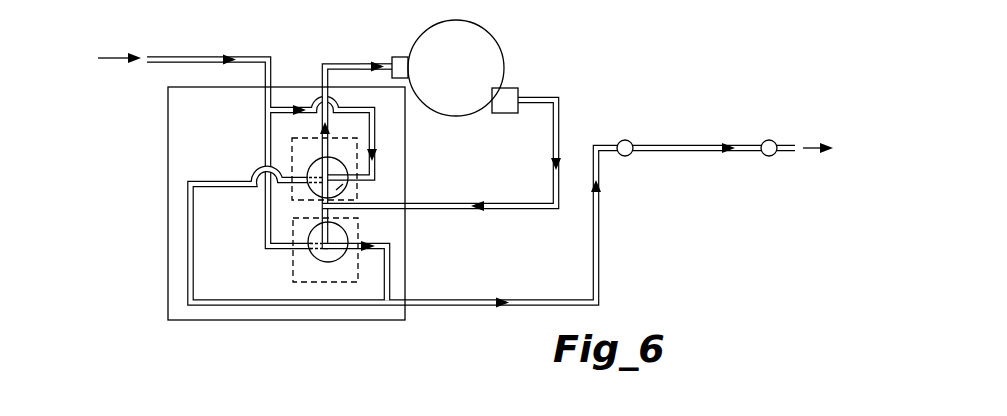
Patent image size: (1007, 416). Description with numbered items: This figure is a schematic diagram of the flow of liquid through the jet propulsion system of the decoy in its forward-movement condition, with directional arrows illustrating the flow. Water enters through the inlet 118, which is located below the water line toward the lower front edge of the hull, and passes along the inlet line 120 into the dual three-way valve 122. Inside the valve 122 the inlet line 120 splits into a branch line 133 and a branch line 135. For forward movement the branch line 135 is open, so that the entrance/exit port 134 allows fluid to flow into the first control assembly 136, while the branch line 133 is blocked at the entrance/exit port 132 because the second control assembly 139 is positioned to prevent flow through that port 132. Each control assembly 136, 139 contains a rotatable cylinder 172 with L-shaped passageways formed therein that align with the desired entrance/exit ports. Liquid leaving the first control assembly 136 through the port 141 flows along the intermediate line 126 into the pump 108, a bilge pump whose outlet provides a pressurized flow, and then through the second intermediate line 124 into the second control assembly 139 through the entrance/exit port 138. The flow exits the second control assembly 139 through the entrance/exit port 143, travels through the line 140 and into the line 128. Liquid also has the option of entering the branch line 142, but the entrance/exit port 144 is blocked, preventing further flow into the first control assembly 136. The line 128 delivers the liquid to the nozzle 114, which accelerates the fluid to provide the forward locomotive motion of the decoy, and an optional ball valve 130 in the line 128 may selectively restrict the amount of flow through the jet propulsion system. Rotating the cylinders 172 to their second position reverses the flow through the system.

The pump 108 is at (500, 50).
The nozzle 114 is at (782, 107).
The inlet 118 is at (147, 62).
The inlet line 120 is at (220, 33).
The dual three-way valve 122 is at (180, 147).
The second intermediate line 124 is at (546, 97).
The intermediate line 126 is at (350, 64).
The line 128 is at (437, 306).
The ball valve 130 is at (660, 110).
The entrance/exit port 132 is at (305, 246).
The branch line 133 is at (265, 116).
The entrance/exit port 134 is at (345, 190).
The branch line 135 is at (277, 107).
The first control assembly 136 is at (268, 138).
The entrance/exit port 138 is at (350, 208).
The second control assembly 139 is at (295, 268).
The line 140 is at (395, 300).
The port 141 is at (322, 158).
The branch line 142 is at (188, 267).
The entrance/exit port 143 is at (385, 247).
The entrance/exit port 144 is at (305, 178).
The rotatable cylinder 172 is at (328, 263).